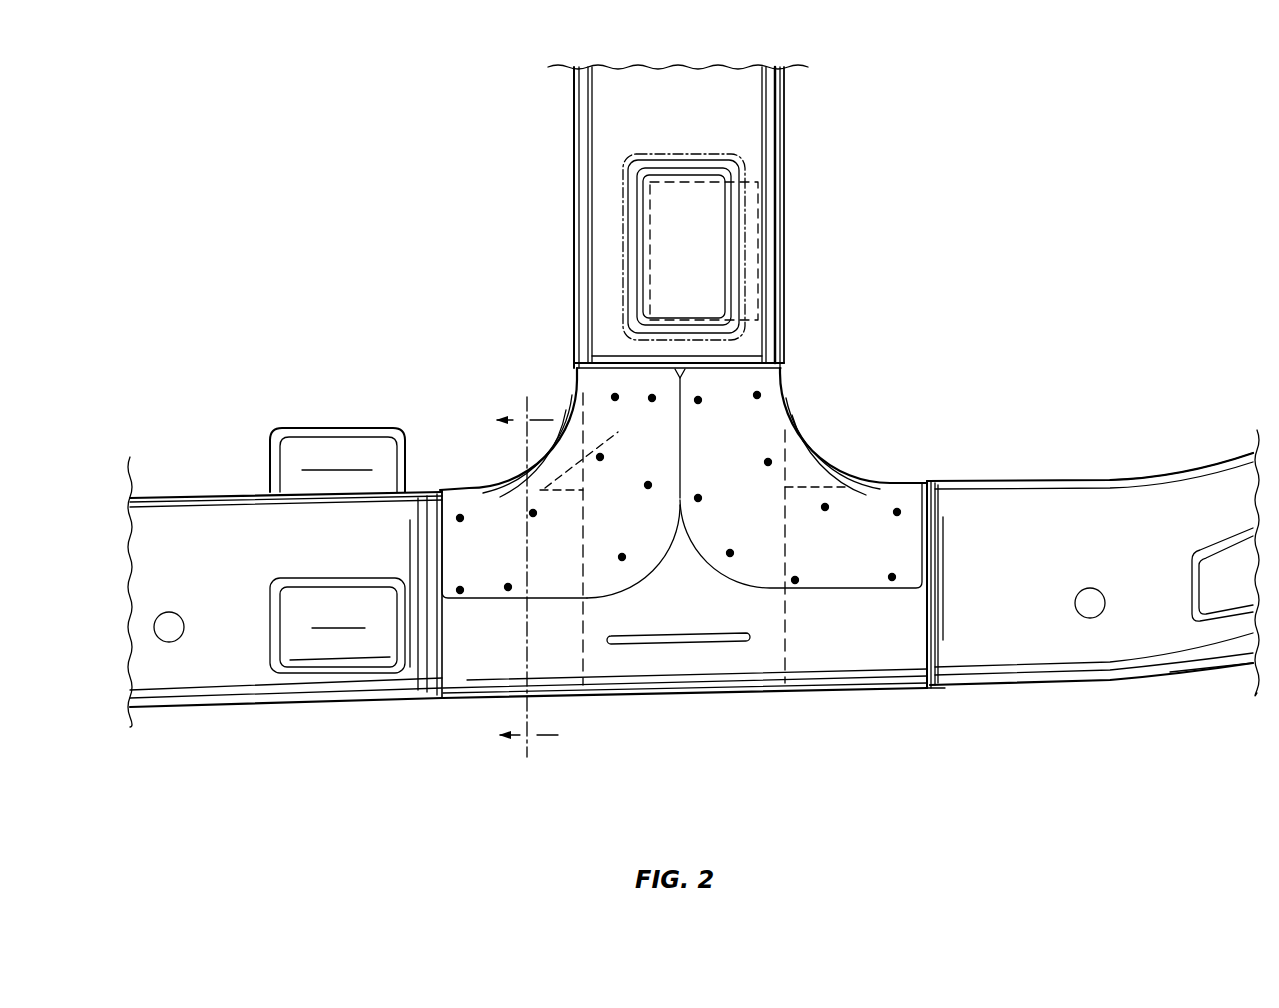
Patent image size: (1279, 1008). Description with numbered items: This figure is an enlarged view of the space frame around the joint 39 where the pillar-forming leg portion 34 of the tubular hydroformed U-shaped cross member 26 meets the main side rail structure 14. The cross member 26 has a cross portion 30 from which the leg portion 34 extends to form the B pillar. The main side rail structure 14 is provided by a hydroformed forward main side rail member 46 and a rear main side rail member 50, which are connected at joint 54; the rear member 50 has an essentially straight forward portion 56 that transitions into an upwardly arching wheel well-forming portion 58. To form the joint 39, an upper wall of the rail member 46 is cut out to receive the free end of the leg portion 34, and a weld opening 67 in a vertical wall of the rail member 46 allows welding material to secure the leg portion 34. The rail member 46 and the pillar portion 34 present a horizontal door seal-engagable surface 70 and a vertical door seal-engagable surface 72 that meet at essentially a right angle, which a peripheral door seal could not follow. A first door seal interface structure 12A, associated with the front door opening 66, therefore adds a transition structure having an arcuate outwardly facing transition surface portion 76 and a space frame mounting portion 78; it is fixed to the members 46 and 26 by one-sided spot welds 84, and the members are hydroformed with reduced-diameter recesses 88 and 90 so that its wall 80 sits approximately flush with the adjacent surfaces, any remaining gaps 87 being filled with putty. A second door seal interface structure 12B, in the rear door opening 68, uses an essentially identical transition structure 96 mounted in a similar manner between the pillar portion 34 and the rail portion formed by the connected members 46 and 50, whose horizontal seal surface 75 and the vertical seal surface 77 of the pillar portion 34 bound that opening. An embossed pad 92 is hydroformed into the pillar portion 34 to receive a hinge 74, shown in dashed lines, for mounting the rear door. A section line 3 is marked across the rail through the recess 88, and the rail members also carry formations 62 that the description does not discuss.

The door seal interface structure 12A is at (463, 367).
The door seal interface structure 12B is at (825, 420).
The main side rail structure 14 is at (412, 707).
The tubular hydroformed U-shaped cross member 26 is at (790, 172).
The cross portion 30 is at (763, 133).
The pillar-forming leg portion 34 is at (778, 101).
The joint 39 is at (787, 521).
The forward main side rail member 46 is at (222, 672).
The rear main side rail member 50 is at (1030, 653).
The joint 54 is at (933, 692).
The forward portion 56 is at (1075, 513).
The wheel well-forming portion 58 is at (1210, 497).
The embossment 62 is at (345, 425).
The door opening 66 is at (258, 355).
The weld opening 67 is at (690, 642).
The door opening 68 is at (1130, 352).
The door seal-engagable surface 70 is at (147, 507).
The door seal-engagable surface 72 is at (591, 256).
The hinges 74 is at (757, 204).
The door seal-engagable surface 75 is at (872, 468).
The transition surface portion 76 is at (500, 490).
The door seal-engagable surface 77 is at (780, 271).
The space frame mounting portion 78 is at (463, 667).
The wall 80 is at (617, 572).
The one-sided spot welds 84 is at (728, 552).
The gaps 87 is at (580, 368).
The reduced-diameter area 88 is at (425, 490).
The reduced-diameter area 90 is at (578, 372).
The embossed pads 92 is at (713, 237).
The transition structure 96 is at (807, 470).
The section line 3- 3 is at (515, 577).